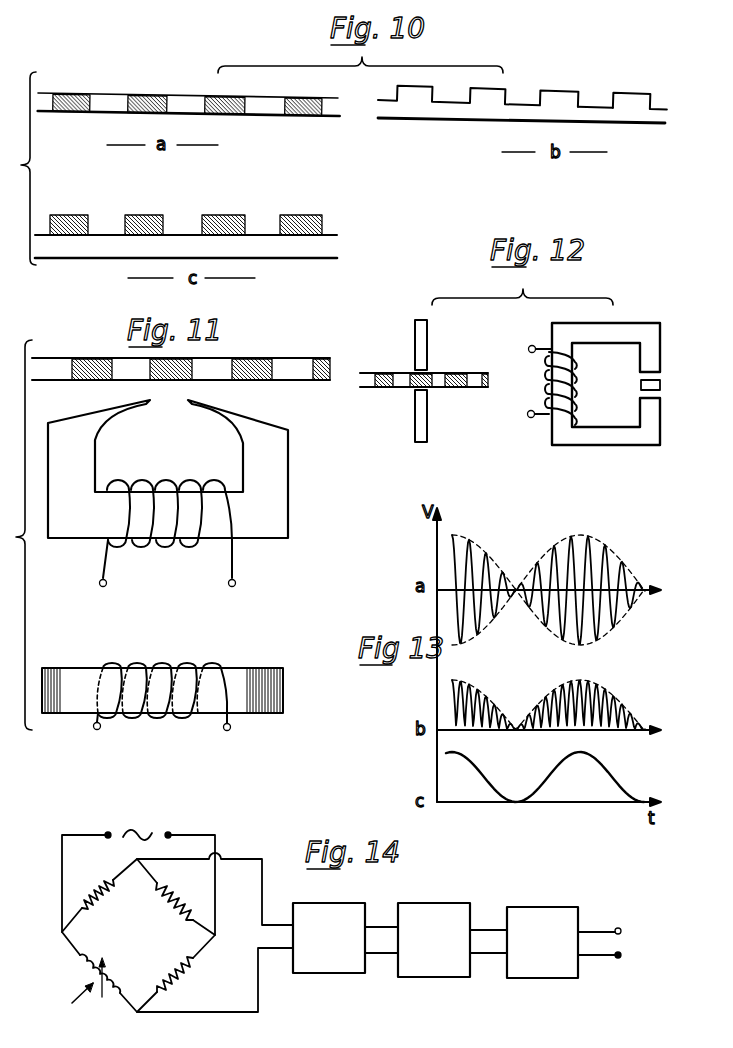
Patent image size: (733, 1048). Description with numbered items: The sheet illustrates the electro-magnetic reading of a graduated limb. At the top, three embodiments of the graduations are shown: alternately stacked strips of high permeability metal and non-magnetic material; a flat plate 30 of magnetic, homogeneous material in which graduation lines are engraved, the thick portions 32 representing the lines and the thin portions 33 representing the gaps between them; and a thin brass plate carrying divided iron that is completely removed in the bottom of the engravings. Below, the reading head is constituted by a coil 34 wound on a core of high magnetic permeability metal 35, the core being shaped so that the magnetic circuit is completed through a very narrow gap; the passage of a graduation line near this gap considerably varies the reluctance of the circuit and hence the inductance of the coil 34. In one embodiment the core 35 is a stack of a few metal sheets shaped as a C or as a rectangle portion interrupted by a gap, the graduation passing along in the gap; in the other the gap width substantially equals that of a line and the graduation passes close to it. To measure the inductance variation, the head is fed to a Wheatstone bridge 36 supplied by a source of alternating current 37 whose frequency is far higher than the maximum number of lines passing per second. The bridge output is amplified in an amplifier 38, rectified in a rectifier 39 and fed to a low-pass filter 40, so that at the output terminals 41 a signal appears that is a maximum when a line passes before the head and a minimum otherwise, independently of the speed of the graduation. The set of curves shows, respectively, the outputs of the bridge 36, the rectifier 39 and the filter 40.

In FIG. 10, the flat plate 30 is at (417, 111).
In FIG. 10, the thick portions 32 is at (633, 100).
In FIG. 10, the thin portions 33 is at (602, 117).
In FIG. 11, the coil 34 is at (235, 555).
In FIG. 12, the coil 34 is at (545, 415).
In FIG. 11, the core of high magnetic permeability metal 35 is at (268, 465).
In FIG. 12, the core of high magnetic permeability metal 35 is at (421, 358).
In FIG. 14, the Wheatstone bridge 36 is at (132, 970).
In FIG. 14, the source of alternating current 37 is at (185, 832).
In FIG. 14, the amplifier 38 is at (329, 938).
In FIG. 14, the rectifier 39 is at (434, 940).
In FIG. 14, the low-pass filter 40 is at (542, 942).
In FIG. 14, the output terminals 41 is at (621, 928).